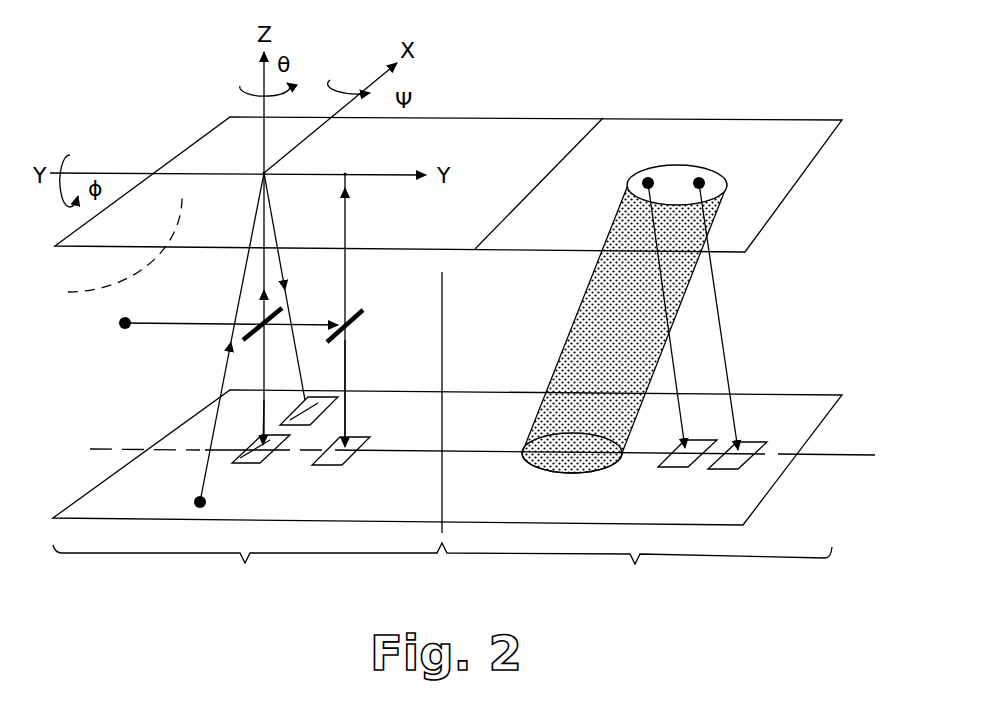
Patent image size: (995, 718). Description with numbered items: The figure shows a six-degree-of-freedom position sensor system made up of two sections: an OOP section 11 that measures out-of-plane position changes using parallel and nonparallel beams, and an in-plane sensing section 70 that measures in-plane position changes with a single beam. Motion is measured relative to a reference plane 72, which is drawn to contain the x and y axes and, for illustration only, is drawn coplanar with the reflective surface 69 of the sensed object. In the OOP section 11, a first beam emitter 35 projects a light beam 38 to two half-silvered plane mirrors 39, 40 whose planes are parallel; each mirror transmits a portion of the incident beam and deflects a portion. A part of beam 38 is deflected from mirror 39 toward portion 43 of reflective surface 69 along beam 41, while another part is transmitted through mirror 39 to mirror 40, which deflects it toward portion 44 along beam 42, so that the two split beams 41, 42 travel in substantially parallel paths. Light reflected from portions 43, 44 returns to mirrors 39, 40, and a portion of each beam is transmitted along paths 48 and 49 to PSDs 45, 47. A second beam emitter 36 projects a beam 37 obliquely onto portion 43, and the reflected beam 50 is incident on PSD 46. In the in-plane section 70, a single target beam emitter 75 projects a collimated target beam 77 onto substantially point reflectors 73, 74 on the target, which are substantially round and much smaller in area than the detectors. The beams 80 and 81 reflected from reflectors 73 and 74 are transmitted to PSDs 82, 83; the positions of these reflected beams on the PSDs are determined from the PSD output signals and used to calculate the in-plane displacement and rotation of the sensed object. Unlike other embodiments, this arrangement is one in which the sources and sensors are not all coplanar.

The OOP section 11 is at (248, 356).
The first beam emitter 35 is at (120, 330).
The second beam emitter 36 is at (195, 499).
The second projected beam 37 is at (226, 370).
The first projected beam 38 is at (205, 322).
The half-silvered plane mirror 39 is at (266, 327).
The half-silvered plane mirror 40 is at (364, 323).
The split beam 41 is at (247, 265).
The split beam 42 is at (347, 277).
The portion of reflective surface 43 is at (262, 172).
The portion of reflective surface 44 is at (347, 173).
The PSD 45 is at (250, 470).
The PSD 46 is at (328, 397).
The PSD 47 is at (323, 468).
The reflected beam path 48 is at (262, 385).
The reflected beam path 49 is at (347, 372).
The reflected beam 50 is at (283, 267).
The reflective surface 69 is at (107, 253).
The in-plane sensing section 70 is at (642, 356).
The reference plane 72 is at (797, 195).
The point reflector 73 is at (642, 178).
The point reflector 74 is at (705, 178).
The target beam emitter 75 is at (548, 432).
The target beam 77 is at (578, 310).
The reflected-target beam 80 is at (724, 338).
The reflected-target beam 81 is at (679, 372).
The PSD 82 is at (726, 470).
The PSD 83 is at (672, 470).